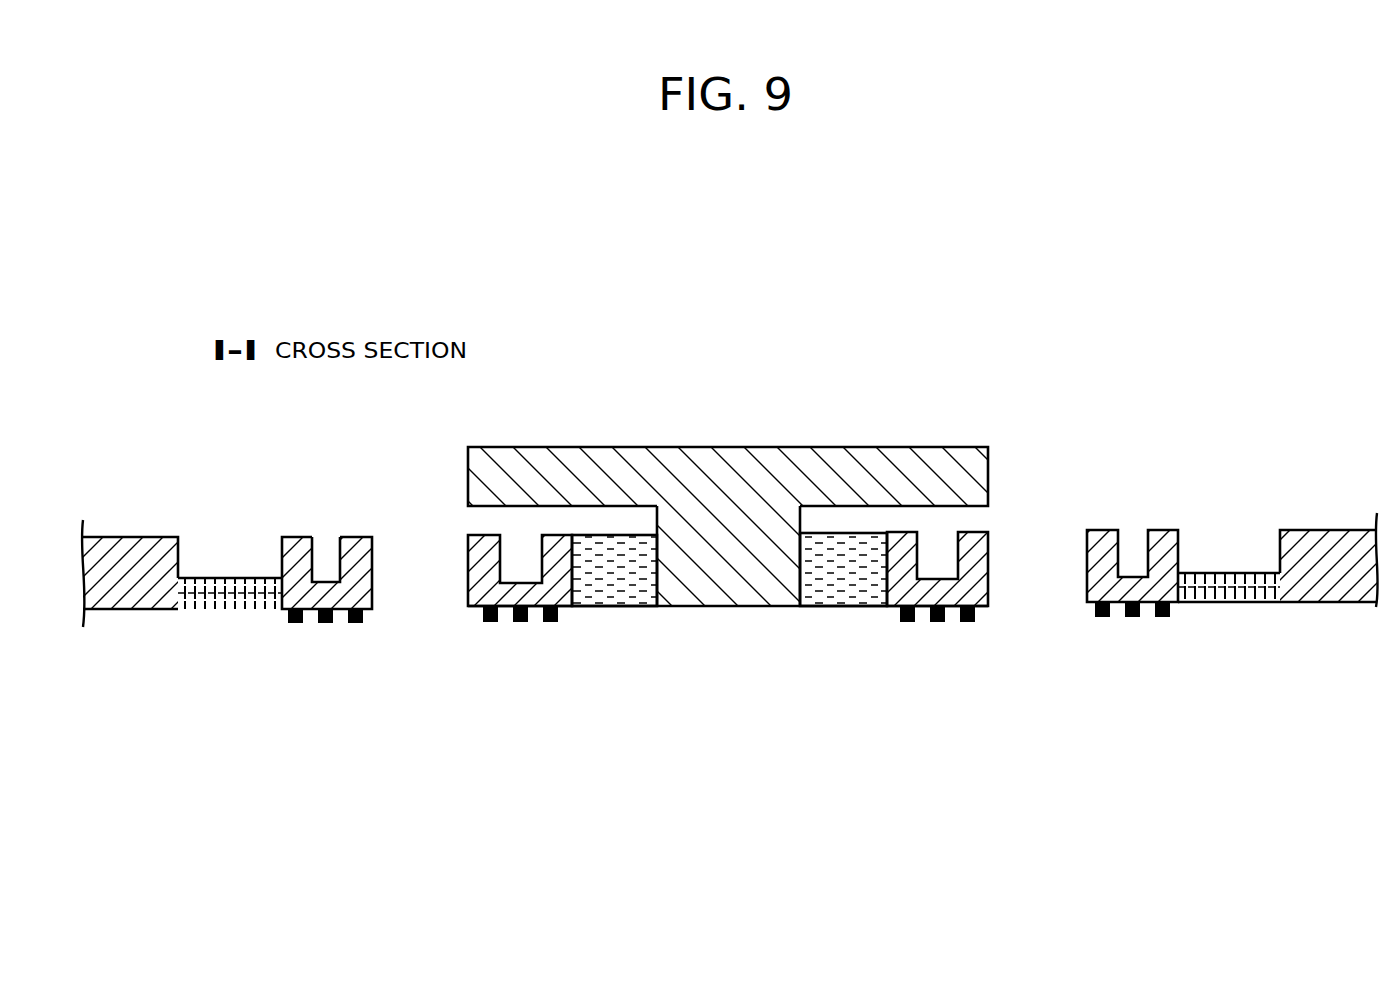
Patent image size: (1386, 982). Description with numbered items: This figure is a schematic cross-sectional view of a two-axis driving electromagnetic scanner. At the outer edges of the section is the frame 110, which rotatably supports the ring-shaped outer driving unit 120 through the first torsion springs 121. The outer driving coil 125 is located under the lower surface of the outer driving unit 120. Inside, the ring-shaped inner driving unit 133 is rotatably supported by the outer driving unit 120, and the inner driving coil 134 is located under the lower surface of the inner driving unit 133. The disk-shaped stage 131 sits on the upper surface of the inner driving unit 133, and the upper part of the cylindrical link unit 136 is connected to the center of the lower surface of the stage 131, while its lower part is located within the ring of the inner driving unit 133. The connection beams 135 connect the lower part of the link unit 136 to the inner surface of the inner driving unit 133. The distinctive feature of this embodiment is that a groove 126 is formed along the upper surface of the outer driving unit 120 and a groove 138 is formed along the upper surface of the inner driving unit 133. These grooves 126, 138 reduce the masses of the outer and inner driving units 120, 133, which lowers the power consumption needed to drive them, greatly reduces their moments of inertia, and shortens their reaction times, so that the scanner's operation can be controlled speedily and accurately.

The frame 110 is at (139, 550).
The outer driving unit 120 is at (292, 548).
The first torsion springs 121 is at (1233, 577).
The outer driving coil 125 is at (330, 625).
The groove 126 is at (328, 540).
The stage 131 is at (955, 453).
The inner driving unit 133 is at (482, 552).
The inner driving coil 134 is at (518, 625).
The connection beams 135 is at (607, 583).
The link unit 136 is at (710, 588).
The groove 138 is at (942, 535).